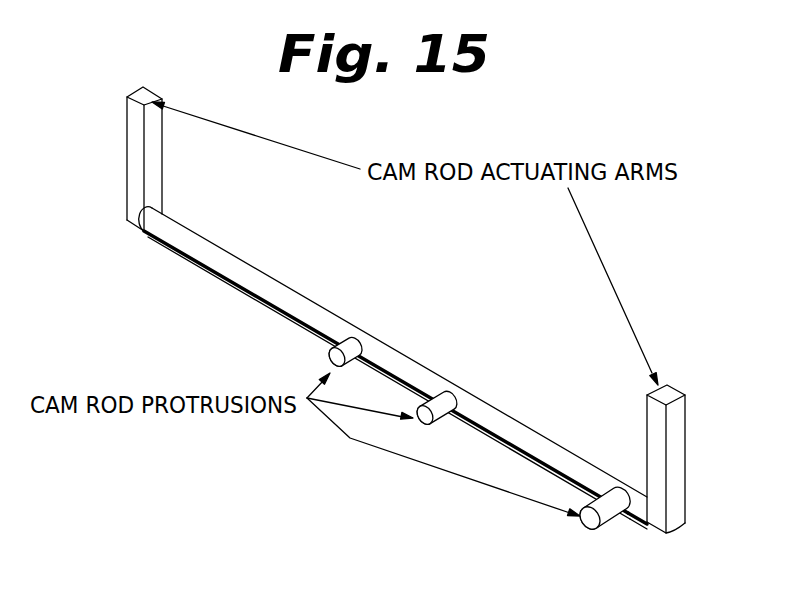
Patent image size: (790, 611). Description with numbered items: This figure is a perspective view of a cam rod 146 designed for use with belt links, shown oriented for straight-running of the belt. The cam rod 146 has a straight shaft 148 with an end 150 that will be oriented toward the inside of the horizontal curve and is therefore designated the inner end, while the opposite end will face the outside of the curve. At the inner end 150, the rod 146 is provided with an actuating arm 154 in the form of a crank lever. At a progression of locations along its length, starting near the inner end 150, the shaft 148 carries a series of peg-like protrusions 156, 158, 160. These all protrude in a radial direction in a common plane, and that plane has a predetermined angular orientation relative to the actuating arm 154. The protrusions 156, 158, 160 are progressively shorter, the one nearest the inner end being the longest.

The cam rod 146 is at (192, 295).
The straight shaft 148 is at (388, 362).
The inner end 150 is at (635, 523).
The actuating arm 154 is at (128, 170).
The peg-like protrusion 156 is at (603, 530).
The peg-like protrusion 158 is at (425, 425).
The peg-like protrusion 160 is at (330, 363).